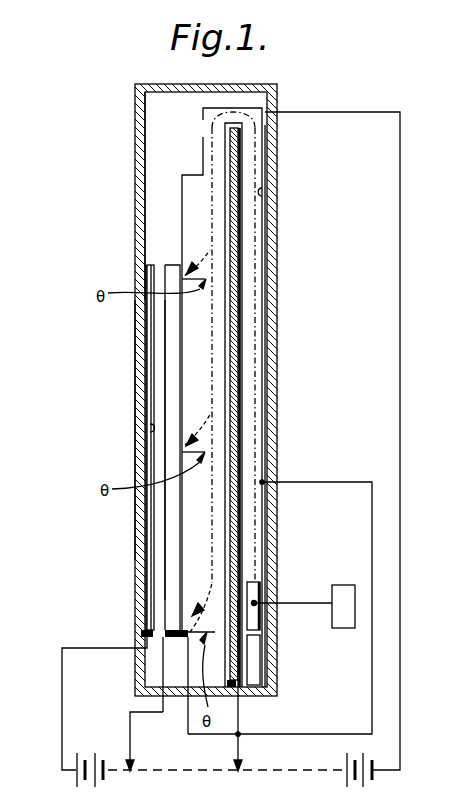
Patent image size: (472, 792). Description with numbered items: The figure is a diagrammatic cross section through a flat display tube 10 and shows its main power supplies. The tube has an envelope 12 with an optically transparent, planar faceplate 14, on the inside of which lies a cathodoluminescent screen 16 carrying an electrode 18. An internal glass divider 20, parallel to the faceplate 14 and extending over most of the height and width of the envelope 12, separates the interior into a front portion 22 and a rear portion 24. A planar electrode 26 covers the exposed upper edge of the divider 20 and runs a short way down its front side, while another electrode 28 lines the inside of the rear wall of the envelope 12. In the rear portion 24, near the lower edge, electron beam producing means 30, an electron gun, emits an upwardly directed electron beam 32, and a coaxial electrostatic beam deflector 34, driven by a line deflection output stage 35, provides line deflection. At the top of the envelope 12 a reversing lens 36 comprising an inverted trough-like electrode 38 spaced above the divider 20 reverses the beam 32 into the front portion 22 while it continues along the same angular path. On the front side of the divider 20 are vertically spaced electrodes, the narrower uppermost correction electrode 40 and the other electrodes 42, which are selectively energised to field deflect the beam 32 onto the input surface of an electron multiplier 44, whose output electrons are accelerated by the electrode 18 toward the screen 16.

The flat display tube 10 is at (131, 185).
The envelope 12 is at (263, 696).
The faceplate 14 is at (139, 578).
The cathodoluminescent screen 16 is at (148, 524).
The electrode 18 is at (150, 428).
The divider 20 is at (241, 385).
The front portion 22 is at (197, 673).
The rear portion 24 is at (241, 658).
The planar electrode 26 is at (243, 163).
The electrode 28 is at (265, 202).
The electron beam producing means 30 is at (253, 647).
The electron beam 32 is at (256, 321).
The electrostatic beam deflector 34 is at (264, 585).
The line deflection output stage 35 is at (345, 585).
The reversing lens 36 is at (198, 114).
The trough-like electrode 38 is at (240, 108).
The correction electrode 40 is at (224, 153).
The electrodes 42 is at (204, 203).
The electron multiplier 44 is at (168, 372).